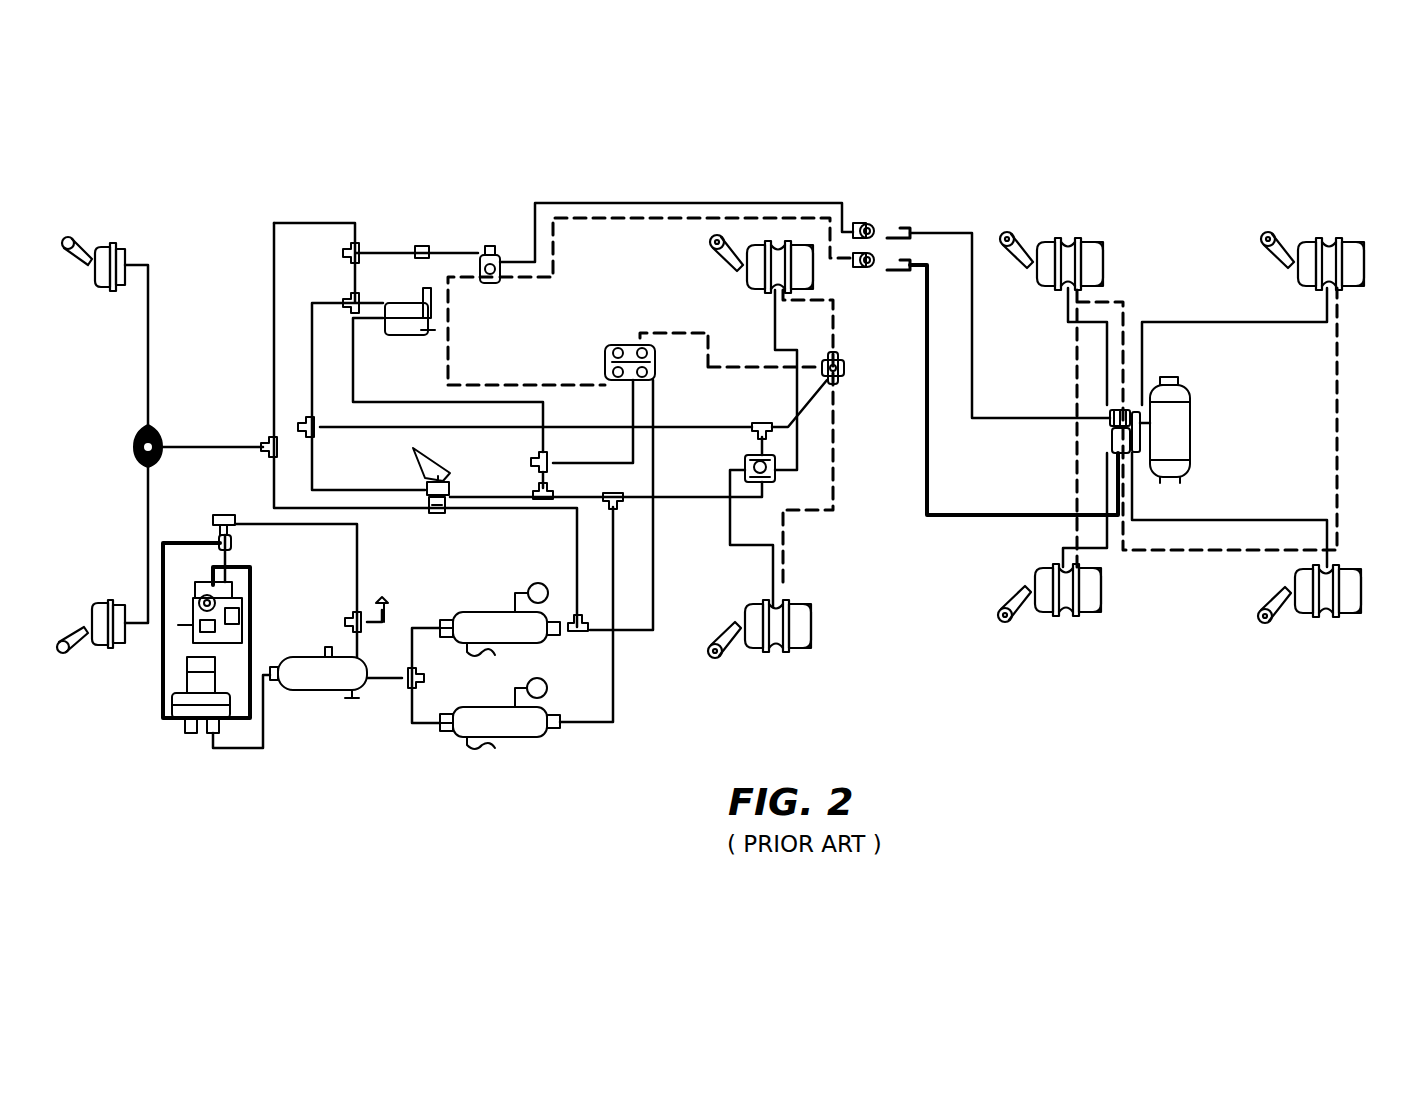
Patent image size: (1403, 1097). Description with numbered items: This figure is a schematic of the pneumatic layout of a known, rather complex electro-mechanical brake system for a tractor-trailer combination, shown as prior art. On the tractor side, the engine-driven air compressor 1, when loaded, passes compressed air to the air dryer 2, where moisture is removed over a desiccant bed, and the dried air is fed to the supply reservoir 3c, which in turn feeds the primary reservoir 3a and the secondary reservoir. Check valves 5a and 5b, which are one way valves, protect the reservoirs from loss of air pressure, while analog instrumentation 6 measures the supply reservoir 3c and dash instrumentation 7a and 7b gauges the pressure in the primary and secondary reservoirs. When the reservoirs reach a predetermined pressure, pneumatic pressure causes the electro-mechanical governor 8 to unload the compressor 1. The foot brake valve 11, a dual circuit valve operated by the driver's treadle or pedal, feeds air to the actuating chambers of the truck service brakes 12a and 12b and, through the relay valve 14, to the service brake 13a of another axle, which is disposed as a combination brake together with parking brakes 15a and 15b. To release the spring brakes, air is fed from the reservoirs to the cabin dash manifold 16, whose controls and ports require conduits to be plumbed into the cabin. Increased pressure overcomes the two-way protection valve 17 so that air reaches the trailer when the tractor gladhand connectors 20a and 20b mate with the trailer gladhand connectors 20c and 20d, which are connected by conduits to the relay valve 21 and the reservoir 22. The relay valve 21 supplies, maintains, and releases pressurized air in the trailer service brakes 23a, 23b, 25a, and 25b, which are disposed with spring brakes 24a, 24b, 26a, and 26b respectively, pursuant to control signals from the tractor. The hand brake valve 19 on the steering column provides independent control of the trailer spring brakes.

The air compressor 1 is at (246, 627).
The air dryer 2 is at (192, 742).
The primary reservoir 3a is at (523, 727).
The supply reservoir 3c is at (312, 696).
The check valve 5a is at (442, 744).
The check valve 5b is at (445, 646).
The analog instrumentation 6 is at (382, 598).
The instrumentation 7a is at (549, 683).
The instrumentation 7b is at (536, 582).
The electro-mechanical governor 8 is at (225, 512).
The foot brake valve 11 is at (432, 450).
The truck service brake 12a is at (122, 243).
The truck service brake 12b is at (100, 650).
The truck service brake 13a is at (755, 246).
The relay valve 14 is at (777, 480).
The parking brake 15a is at (802, 245).
The parking brake 15b is at (800, 650).
The cabin dash manifold 16 is at (612, 340).
The two-way protection valve 17 is at (488, 250).
The hand brake valve 19 is at (416, 342).
The gladhand connector 20a is at (872, 224).
The gladhand connector 20b is at (866, 272).
The gladhand connector 20c is at (922, 226).
The gladhand connector 20d is at (905, 280).
The relay valve 21 is at (1106, 437).
The reservoir 22 is at (1172, 430).
The service brake 23a is at (1044, 246).
The service brake 23b is at (1037, 620).
The spring brake 24a is at (1105, 247).
The spring brake 24b is at (1100, 620).
The service brake 25a is at (1312, 246).
The service brake 25b is at (1298, 620).
The spring brake 26a is at (1362, 243).
The spring brake 26b is at (1354, 620).